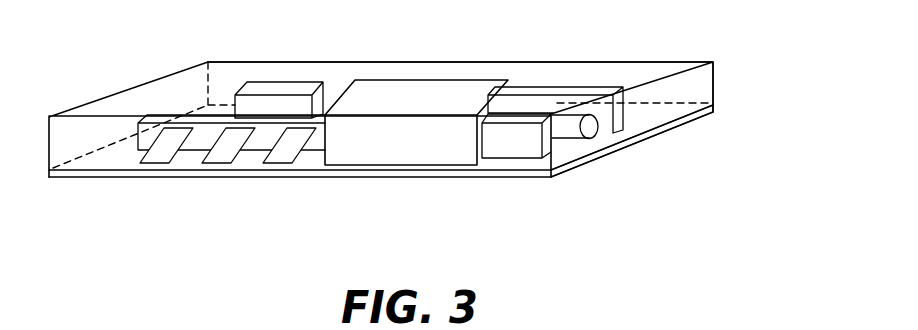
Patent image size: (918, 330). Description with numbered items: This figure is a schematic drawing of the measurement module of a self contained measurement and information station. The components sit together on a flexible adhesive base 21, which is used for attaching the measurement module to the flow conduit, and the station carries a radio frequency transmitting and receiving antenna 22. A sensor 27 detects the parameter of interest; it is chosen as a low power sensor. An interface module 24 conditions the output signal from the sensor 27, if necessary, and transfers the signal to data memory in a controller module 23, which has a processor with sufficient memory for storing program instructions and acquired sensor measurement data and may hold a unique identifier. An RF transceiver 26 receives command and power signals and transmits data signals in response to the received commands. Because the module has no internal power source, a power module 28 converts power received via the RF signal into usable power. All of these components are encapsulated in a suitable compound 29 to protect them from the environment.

The flexible adhesive base 21 is at (573, 176).
The radio frequency transmitting and receiving antenna 22 is at (632, 141).
The controller module 23 is at (419, 78).
The interface module 24 is at (557, 80).
The RF transceiver 26 is at (136, 186).
The sensor 27 is at (270, 76).
The power module 28 is at (600, 134).
The compound 29 is at (693, 88).